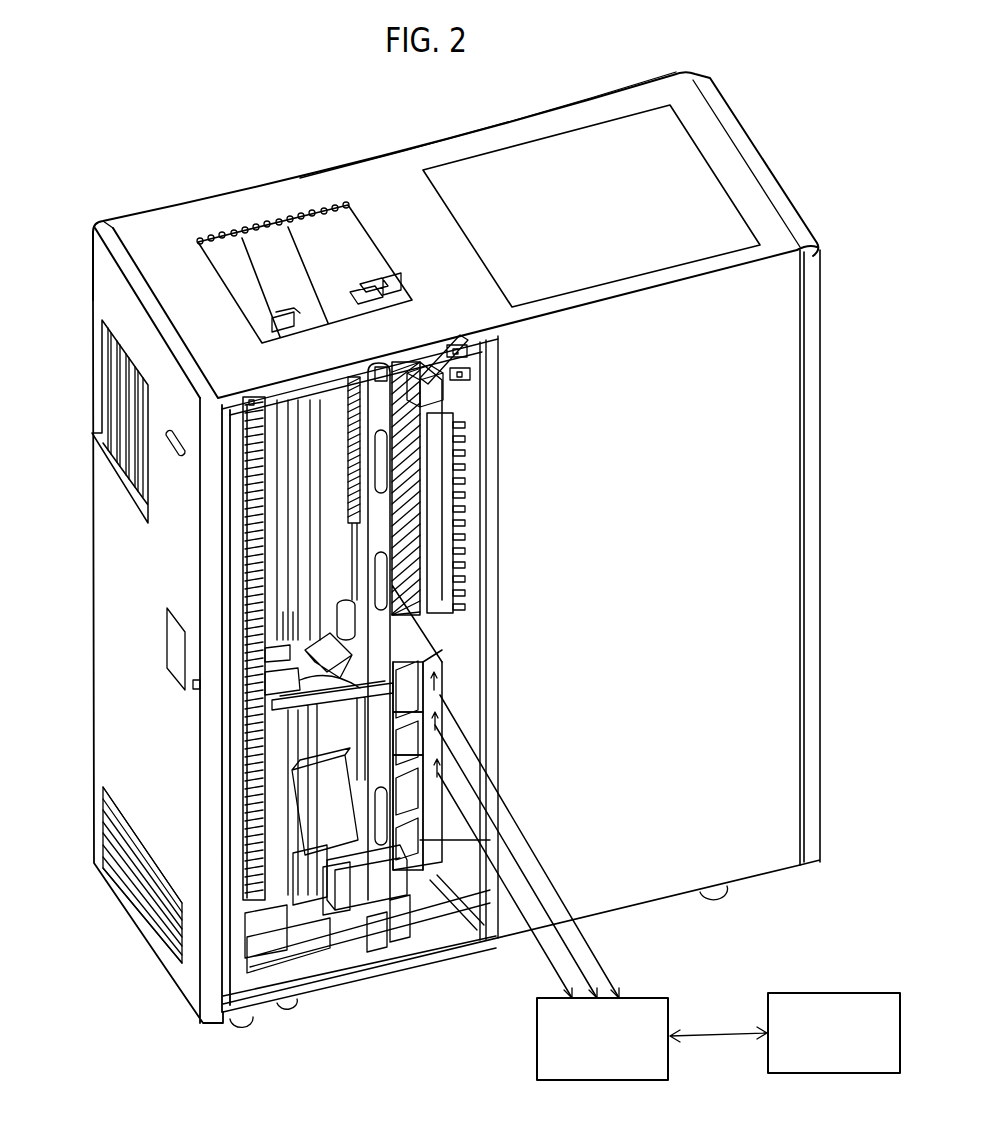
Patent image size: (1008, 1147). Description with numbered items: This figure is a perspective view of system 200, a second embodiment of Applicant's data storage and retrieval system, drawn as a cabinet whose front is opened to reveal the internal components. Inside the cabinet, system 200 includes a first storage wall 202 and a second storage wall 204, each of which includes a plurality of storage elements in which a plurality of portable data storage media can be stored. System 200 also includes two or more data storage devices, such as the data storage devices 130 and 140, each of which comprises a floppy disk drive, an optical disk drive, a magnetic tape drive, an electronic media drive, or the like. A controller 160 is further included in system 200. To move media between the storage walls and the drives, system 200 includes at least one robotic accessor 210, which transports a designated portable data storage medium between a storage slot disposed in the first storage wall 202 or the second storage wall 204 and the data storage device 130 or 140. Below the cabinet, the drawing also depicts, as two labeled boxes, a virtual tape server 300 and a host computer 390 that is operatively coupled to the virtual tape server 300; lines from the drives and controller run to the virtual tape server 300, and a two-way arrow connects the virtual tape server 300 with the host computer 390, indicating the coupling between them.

The data storage and retrieval system 200 is at (265, 1018).
The first storage wall 202 is at (438, 449).
The second storage wall 204 is at (237, 532).
The robotic accessor 210 is at (277, 693).
The data storage device 130 is at (436, 723).
The data storage device 140 is at (440, 777).
The controller 160 is at (440, 697).
The virtual tape server 300 is at (634, 1049).
The host computer 390 is at (882, 1046).